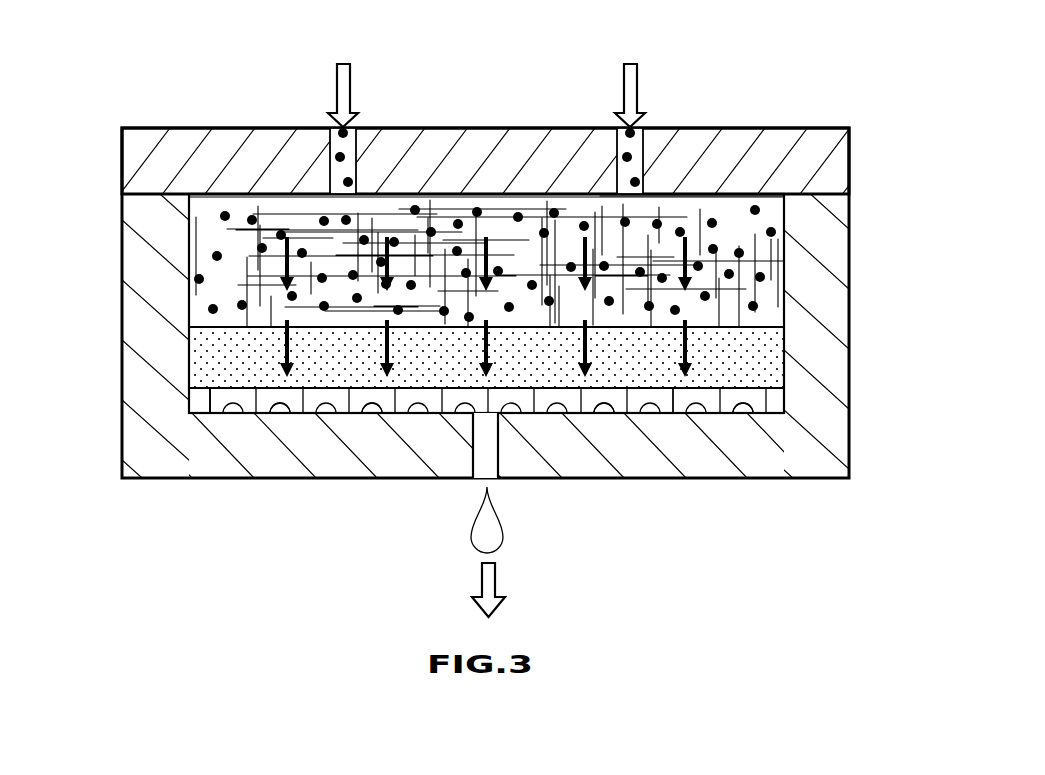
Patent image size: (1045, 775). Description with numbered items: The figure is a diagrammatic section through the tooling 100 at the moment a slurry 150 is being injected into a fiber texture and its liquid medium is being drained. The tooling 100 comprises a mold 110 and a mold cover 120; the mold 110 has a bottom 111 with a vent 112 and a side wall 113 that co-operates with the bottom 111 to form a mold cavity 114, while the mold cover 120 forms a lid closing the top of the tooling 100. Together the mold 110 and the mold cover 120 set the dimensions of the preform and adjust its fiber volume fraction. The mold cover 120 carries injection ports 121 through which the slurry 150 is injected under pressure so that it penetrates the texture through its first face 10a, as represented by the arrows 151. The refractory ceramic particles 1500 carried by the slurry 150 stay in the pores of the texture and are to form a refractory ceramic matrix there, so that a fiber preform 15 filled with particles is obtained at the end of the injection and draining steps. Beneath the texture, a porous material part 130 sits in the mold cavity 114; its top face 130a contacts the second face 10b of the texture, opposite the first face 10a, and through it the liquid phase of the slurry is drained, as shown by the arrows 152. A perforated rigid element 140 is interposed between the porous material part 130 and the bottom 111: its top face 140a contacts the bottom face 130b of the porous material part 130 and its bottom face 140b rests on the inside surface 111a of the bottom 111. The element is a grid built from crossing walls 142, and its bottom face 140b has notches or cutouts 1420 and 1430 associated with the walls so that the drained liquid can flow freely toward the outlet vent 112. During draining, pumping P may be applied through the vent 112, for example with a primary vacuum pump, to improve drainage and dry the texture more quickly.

The tooling 100 is at (155, 110).
The mold 110 is at (122, 315).
The bottom 111 is at (407, 470).
The inside surface of the bottom 111a is at (733, 417).
The vent 112 is at (487, 447).
The side wall 113 is at (165, 375).
The mold cavity 114 is at (490, 240).
The mold cover 120 is at (217, 152).
The injection ports 121 is at (338, 167).
The porous material part 130 is at (735, 362).
The top face of the porous material part 130a is at (763, 325).
The bottom face of the porous material part 130b is at (755, 413).
The perforated rigid element 140 is at (187, 403).
The top face of the perforated rigid element 140a is at (257, 398).
The bottom face of the perforated rigid element 140b is at (192, 403).
The walls 142 is at (613, 413).
The notches or cutouts 1420 is at (675, 413).
The notches or cutouts 1430 is at (278, 407).
The slurry 150 is at (350, 160).
The refractory ceramic particles 1500 is at (190, 243).
The arrows 151 is at (285, 257).
The arrows 152 is at (280, 362).
The fiber preform 15 is at (443, 272).
The first face of the fiber texture 10a is at (758, 192).
The second face of the fiber texture 10b is at (377, 338).
The pumping P is at (494, 583).